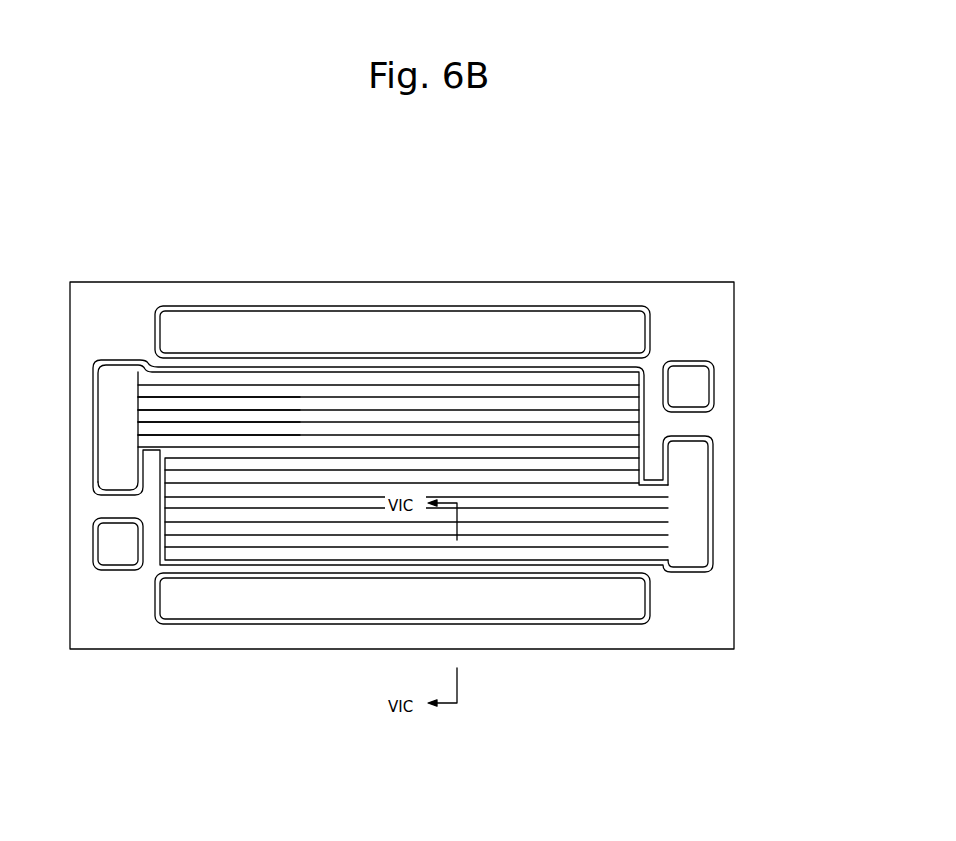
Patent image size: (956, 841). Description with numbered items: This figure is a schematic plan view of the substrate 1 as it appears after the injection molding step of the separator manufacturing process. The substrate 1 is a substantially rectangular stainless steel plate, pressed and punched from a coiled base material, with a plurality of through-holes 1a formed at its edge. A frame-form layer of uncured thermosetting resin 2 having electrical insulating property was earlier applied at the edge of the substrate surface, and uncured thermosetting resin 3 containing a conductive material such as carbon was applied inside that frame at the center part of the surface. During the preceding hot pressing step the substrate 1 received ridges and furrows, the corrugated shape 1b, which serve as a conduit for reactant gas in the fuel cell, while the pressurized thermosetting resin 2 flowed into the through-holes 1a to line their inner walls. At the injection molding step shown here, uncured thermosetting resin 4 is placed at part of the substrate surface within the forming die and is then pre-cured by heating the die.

The substrate 1 is at (674, 203).
The through-holes 1a is at (386, 320).
The corrugated shape 1b is at (296, 431).
The thermosetting resin 2 is at (686, 315).
The thermosetting resin 3 is at (457, 388).
The thermosetting resin 4 is at (571, 305).